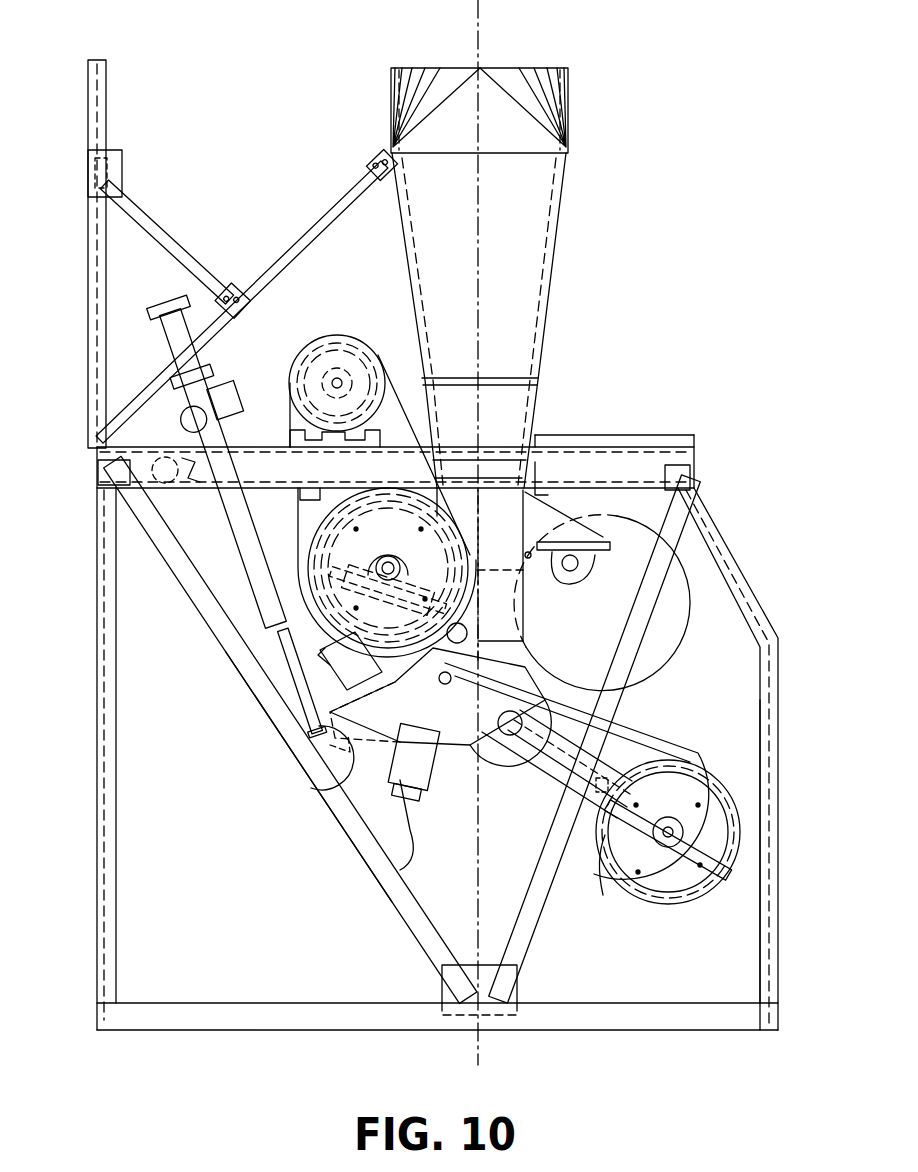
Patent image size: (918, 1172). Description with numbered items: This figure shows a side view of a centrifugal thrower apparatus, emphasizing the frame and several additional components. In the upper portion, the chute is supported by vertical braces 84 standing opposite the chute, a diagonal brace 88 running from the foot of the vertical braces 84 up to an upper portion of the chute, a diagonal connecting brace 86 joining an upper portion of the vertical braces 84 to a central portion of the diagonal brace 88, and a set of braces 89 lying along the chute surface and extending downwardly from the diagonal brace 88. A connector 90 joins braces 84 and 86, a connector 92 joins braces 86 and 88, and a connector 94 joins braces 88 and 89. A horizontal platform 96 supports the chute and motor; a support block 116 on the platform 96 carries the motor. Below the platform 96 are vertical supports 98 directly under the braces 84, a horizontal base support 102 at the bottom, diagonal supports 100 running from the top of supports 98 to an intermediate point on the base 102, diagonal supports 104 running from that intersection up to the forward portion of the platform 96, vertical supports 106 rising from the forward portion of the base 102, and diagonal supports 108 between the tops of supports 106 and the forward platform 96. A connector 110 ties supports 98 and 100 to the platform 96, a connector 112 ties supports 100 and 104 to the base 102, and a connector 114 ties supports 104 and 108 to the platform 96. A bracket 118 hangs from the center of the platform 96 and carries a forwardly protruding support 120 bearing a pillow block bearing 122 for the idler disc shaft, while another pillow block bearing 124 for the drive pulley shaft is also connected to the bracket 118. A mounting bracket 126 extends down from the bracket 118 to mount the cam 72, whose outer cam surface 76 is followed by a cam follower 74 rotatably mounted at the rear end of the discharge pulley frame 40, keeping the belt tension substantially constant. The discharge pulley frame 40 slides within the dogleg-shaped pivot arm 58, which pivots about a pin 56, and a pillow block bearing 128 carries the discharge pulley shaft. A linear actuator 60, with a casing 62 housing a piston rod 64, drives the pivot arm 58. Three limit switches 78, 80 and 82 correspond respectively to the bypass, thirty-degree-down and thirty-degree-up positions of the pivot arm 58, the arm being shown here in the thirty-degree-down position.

The discharge pulley frame 40 is at (603, 895).
The pin 56 is at (395, 748).
The pivot arm 58 is at (350, 788).
The linear actuator 60 is at (248, 615).
The casing 62 is at (258, 586).
The piston rod 64 is at (300, 690).
The cam 72 is at (520, 668).
The cam follower 74 is at (535, 845).
The outer cam surface 76 is at (545, 670).
The first limit switch 78 is at (398, 800).
The limit switch 80 is at (325, 785).
The limit switch 82 is at (296, 634).
The vertical braces 84 is at (94, 280).
The diagonal connecting brace 86 is at (188, 268).
The diagonal brace 88 is at (350, 203).
The set of braces 89 is at (416, 254).
The connector 90 is at (118, 162).
The connector 92 is at (236, 320).
The connector 94 is at (378, 158).
The horizontal platform 96 is at (630, 470).
The vertical supports 98 is at (112, 568).
The diagonal supports 100 is at (405, 898).
The horizontal base support 102 is at (234, 1027).
The diagonal supports 104 is at (535, 910).
The vertical supports 106 is at (768, 872).
The diagonal supports 108 is at (760, 615).
The connector 110 is at (98, 475).
The connector 112 is at (445, 980).
The connector 114 is at (688, 470).
The support block 116 is at (298, 418).
The bracket 118 is at (518, 493).
The support 120 is at (680, 560).
The pillow block bearing 122 is at (578, 562).
The pillow block bearing 124 is at (348, 552).
The mounting bracket 126 is at (388, 692).
The pillow block bearing 128 is at (672, 905).